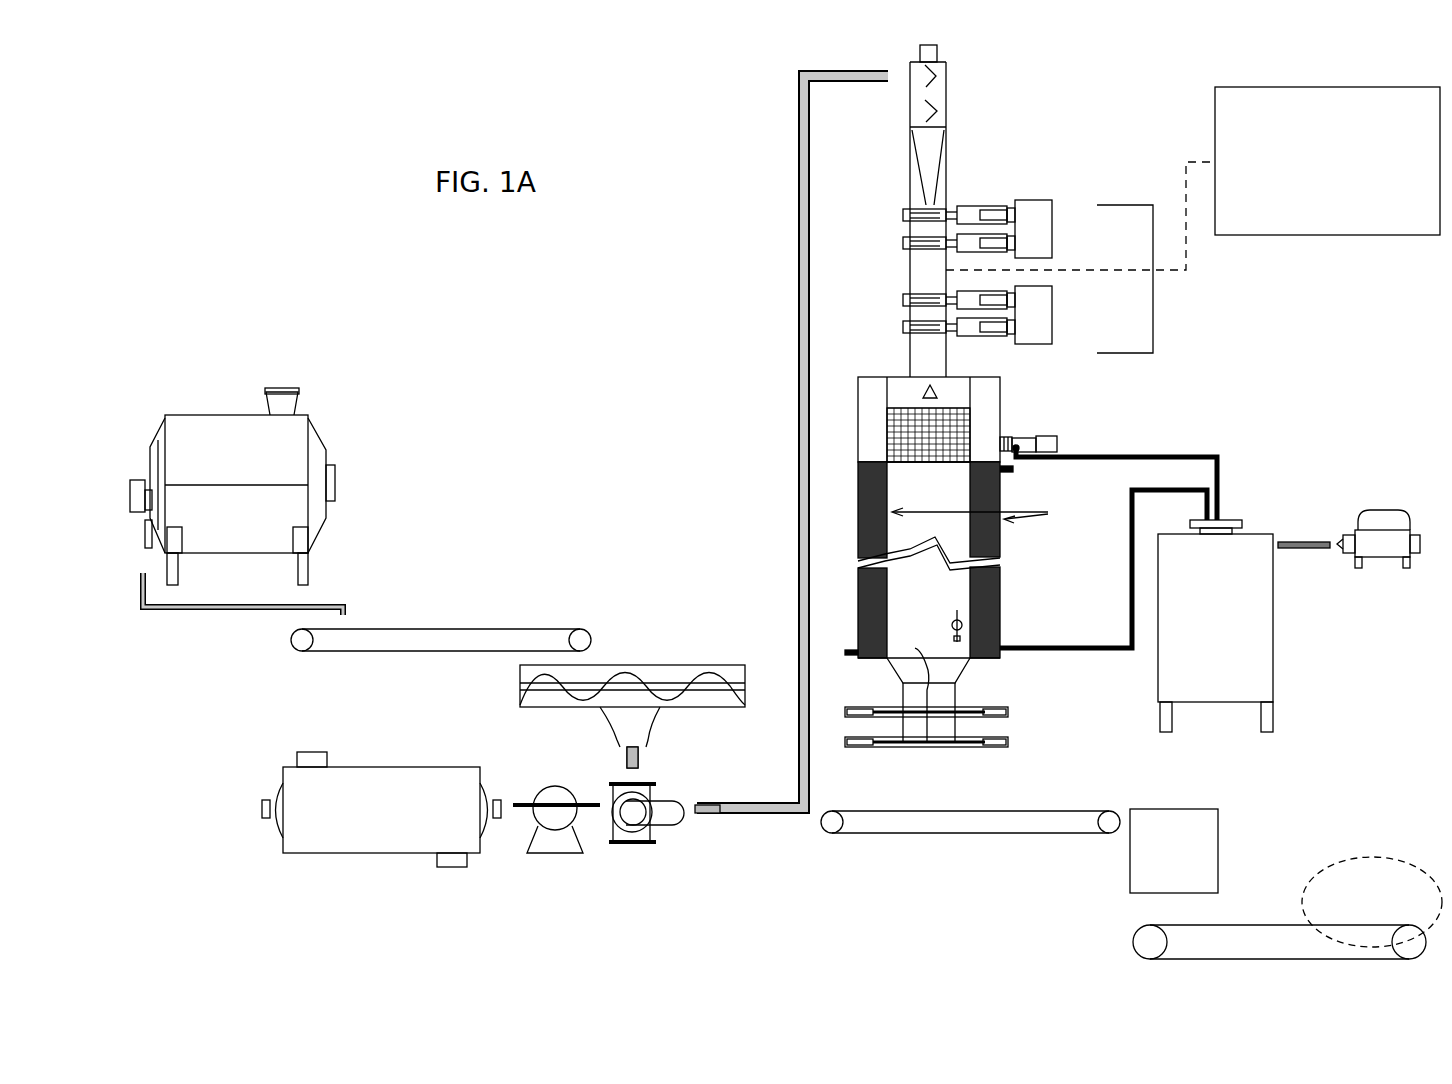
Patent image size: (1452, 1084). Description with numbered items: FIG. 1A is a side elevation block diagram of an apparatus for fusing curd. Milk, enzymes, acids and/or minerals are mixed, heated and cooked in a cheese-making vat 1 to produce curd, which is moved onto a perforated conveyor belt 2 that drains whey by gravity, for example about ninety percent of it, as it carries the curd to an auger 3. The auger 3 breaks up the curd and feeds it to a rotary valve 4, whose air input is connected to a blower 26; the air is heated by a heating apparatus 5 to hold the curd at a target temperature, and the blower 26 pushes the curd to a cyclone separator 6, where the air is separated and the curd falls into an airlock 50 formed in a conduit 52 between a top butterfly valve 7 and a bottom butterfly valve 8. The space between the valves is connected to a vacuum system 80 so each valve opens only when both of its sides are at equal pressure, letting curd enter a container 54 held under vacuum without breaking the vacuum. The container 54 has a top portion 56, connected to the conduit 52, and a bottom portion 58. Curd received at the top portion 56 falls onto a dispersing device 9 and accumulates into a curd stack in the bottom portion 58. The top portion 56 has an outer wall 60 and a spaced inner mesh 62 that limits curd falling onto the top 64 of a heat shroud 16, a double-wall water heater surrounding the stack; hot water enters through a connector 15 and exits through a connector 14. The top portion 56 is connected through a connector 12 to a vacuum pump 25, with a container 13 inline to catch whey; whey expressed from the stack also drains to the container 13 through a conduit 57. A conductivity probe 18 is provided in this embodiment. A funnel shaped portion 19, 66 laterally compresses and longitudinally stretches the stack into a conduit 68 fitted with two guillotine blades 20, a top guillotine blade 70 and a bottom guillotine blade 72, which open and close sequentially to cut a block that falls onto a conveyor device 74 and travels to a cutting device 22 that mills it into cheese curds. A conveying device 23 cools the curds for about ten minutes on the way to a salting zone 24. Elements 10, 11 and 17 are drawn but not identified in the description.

The cheese-making vat 1 is at (238, 390).
The perforated conveyor belt 2 is at (430, 615).
The auger 3 is at (650, 655).
The rotary valve 4 is at (623, 860).
The heating apparatus 5 is at (365, 870).
The cyclone separator 6 is at (952, 102).
The top butterfly valve 7 is at (1035, 250).
The bottom butterfly valve 8 is at (1035, 333).
The dispersing device 9 is at (912, 378).
The reactor head 10 is at (985, 400).
The heating elements 11 is at (985, 420).
The connector 12 is at (1063, 434).
The container 13 is at (1258, 525).
The connector 14 is at (1013, 470).
The connector 15 is at (845, 650).
The heat shroud 16 is at (983, 513).
The reactor wall 17 is at (970, 494).
The conductivity probe 18 is at (957, 610).
The funnel shaped portion 19 is at (911, 691).
The guillotine blades 20 is at (1005, 728).
The cutting device 22 is at (1174, 851).
The conveying device 23 is at (1262, 925).
The salting zone 24 is at (1383, 857).
The vacuum pump 25 is at (1410, 520).
The blower 26 is at (555, 858).
The airlock 50 is at (1153, 284).
The conduit 52 is at (910, 272).
The container 54 is at (858, 540).
The top portion 56 is at (997, 437).
The conduit 57 is at (1055, 645).
The bottom portion 58 is at (998, 588).
The outer wall 60 is at (858, 395).
The inner mesh 62 is at (967, 440).
The top of heat shroud 64 is at (875, 463).
The funnel shaped portion 66 is at (968, 662).
The conduit 68 is at (903, 690).
The top guillotine blade 70 is at (935, 717).
The bottom guillotine blade 72 is at (920, 744).
The conveyor device 74 is at (1005, 795).
The vacuum system 80 is at (1327, 161).